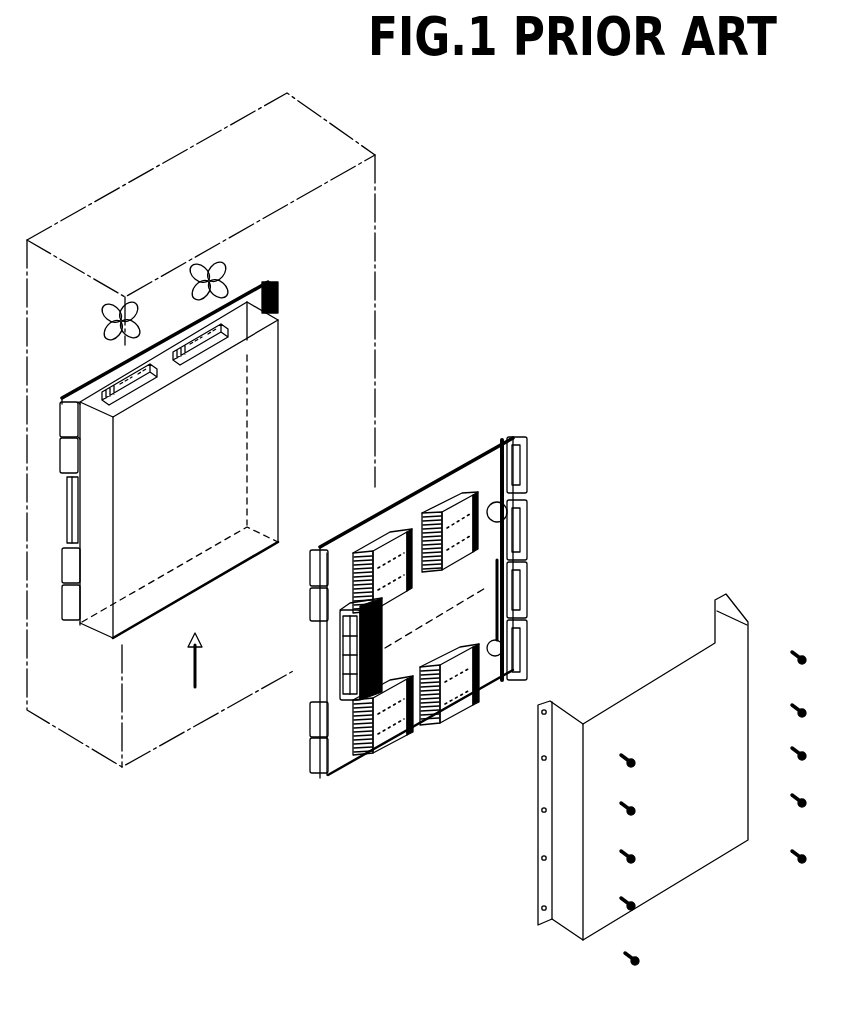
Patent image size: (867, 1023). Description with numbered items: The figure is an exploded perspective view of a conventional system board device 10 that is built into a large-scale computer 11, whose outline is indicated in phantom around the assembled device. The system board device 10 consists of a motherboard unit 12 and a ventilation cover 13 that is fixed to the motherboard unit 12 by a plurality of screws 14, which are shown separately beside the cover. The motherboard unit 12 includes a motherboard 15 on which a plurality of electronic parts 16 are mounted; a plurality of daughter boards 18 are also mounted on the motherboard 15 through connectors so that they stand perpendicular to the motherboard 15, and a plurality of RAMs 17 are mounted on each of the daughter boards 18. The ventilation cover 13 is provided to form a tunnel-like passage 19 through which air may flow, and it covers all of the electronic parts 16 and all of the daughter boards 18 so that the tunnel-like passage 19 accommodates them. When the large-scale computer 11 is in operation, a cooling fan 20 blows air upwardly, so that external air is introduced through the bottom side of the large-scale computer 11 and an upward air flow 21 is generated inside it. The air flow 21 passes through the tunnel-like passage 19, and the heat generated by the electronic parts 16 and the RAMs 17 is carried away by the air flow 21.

The system board device 10 is at (418, 453).
The large-scale computer 11 is at (246, 112).
The motherboard unit 12 is at (405, 604).
The ventilation cover 13 is at (225, 568).
The screws 14 is at (640, 965).
The motherboard 15 is at (473, 460).
The electronic parts 16 is at (440, 500).
The RAMs 17 is at (348, 660).
The daughter boards 18 is at (345, 712).
The tunnel-like passage 19 is at (278, 492).
The cooling fan 20 is at (226, 270).
The air flow 21 is at (192, 670).